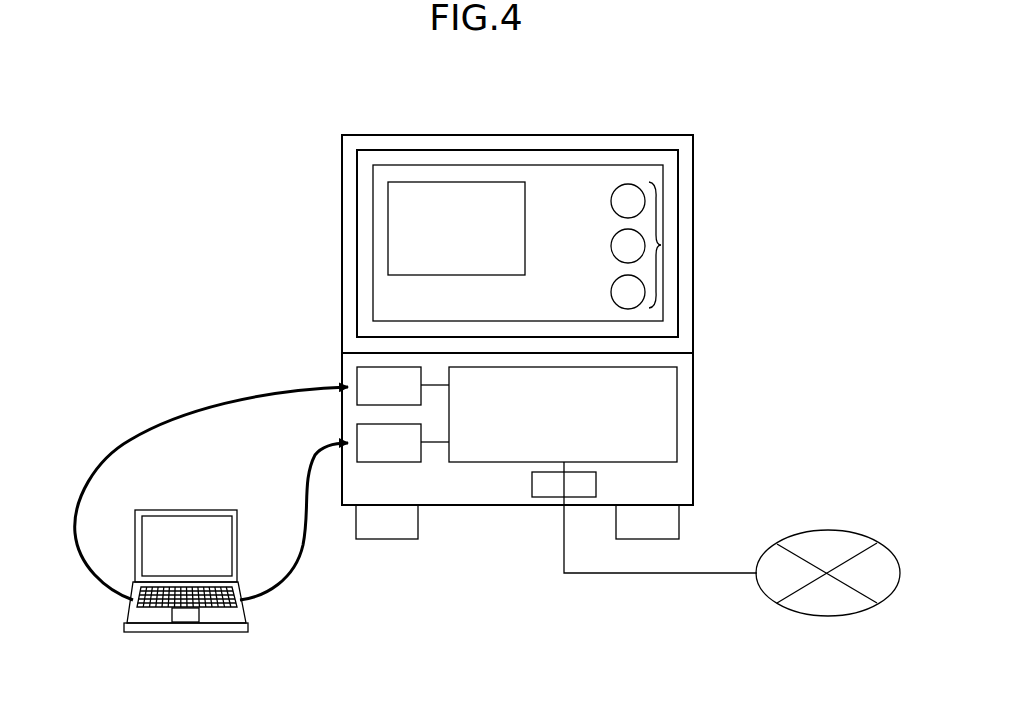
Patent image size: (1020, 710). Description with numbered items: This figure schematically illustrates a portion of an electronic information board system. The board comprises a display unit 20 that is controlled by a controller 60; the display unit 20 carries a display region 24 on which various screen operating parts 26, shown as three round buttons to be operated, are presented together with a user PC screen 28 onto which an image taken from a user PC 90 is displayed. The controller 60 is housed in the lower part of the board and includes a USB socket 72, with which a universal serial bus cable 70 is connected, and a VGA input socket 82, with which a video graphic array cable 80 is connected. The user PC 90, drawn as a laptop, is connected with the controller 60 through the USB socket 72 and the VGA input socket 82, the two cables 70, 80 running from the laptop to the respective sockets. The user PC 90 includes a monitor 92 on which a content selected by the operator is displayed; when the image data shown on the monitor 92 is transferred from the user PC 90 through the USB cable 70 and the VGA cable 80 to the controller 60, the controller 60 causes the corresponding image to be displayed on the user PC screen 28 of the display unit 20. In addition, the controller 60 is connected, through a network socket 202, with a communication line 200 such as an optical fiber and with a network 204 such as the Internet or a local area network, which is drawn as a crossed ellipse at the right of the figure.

The display unit 20 is at (427, 128).
The display unit 24 is at (569, 193).
The screen operating parts 26 is at (661, 245).
The user PC screen 28 is at (473, 194).
The controller 60 is at (677, 416).
The USB cable 70 is at (300, 553).
The USB socket 72 is at (365, 462).
The VGA cable 80 is at (117, 447).
The VGA input socket 82 is at (352, 396).
The user PC 90 is at (127, 608).
The monitor 92 is at (145, 540).
The communication line 200 is at (665, 573).
The network socket 202 is at (550, 497).
The network 204 is at (828, 530).